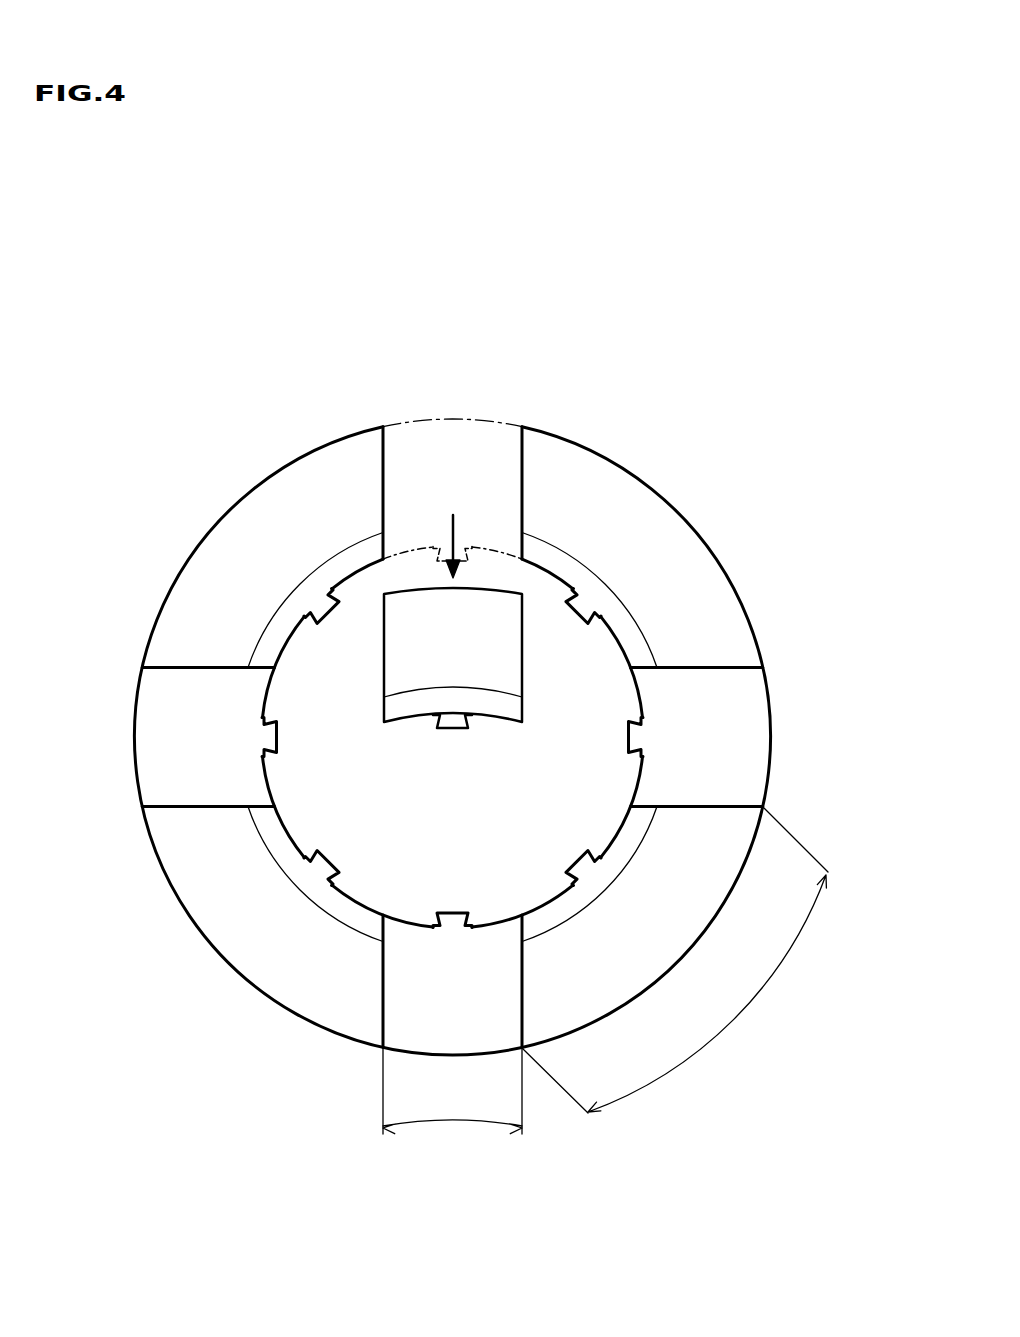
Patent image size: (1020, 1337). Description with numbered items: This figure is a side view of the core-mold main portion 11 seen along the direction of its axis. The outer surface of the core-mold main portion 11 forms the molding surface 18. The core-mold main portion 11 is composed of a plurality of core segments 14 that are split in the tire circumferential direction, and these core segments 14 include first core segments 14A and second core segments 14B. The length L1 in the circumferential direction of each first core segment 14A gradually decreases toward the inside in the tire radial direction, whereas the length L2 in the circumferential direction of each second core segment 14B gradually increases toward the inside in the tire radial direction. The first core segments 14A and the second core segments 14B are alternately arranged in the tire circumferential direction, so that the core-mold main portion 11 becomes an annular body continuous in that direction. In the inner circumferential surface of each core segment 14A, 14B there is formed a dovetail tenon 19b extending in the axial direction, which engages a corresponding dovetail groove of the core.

The core-mold main portion 11 is at (584, 353).
The core segments 14 is at (763, 433).
The first core segment 14A is at (644, 522).
The second core segment 14B is at (467, 418).
The molding surface 18 is at (259, 486).
The dovetail tenon 19b is at (322, 614).
The length in the circumferential direction of the first core segment L1 is at (675, 960).
The length in the circumferential direction of the second core segment L2 is at (452, 1105).